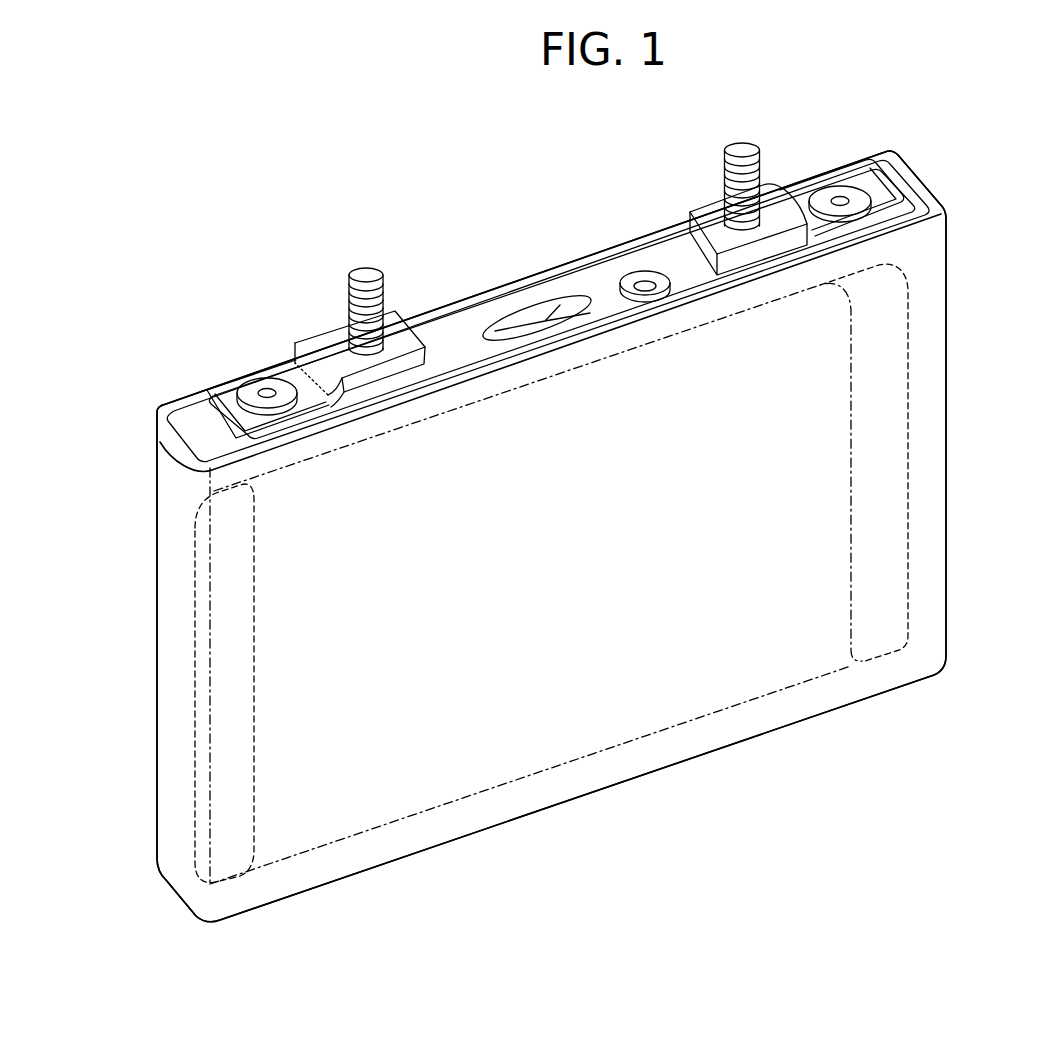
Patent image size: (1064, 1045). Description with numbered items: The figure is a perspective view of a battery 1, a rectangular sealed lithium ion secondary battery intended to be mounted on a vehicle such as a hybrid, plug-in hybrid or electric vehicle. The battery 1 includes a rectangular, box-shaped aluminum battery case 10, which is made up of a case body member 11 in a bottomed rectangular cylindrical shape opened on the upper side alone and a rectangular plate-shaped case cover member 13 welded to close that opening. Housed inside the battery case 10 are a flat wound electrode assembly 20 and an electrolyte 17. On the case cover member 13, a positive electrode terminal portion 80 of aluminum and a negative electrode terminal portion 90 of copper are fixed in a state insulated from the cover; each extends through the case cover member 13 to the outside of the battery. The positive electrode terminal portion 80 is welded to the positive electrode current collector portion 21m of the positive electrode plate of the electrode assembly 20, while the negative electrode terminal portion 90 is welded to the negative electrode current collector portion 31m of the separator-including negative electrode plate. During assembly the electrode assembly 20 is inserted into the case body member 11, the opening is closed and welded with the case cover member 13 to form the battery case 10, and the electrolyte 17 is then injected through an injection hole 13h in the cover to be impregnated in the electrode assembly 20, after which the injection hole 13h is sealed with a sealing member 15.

The battery 1 is at (194, 246).
The battery case 10 is at (934, 462).
The case body member 11 is at (934, 570).
The case cover member 13 is at (455, 342).
The injection hole 13h is at (647, 286).
The sealing member 15 is at (638, 272).
The electrolyte 17 is at (484, 755).
The electrode assembly 20 is at (660, 686).
The positive electrode current collector portion 21m is at (271, 815).
The negative electrode current collector portion 31m is at (870, 609).
The positive electrode terminal portion 80 is at (338, 340).
The negative electrode terminal portion 90 is at (762, 195).